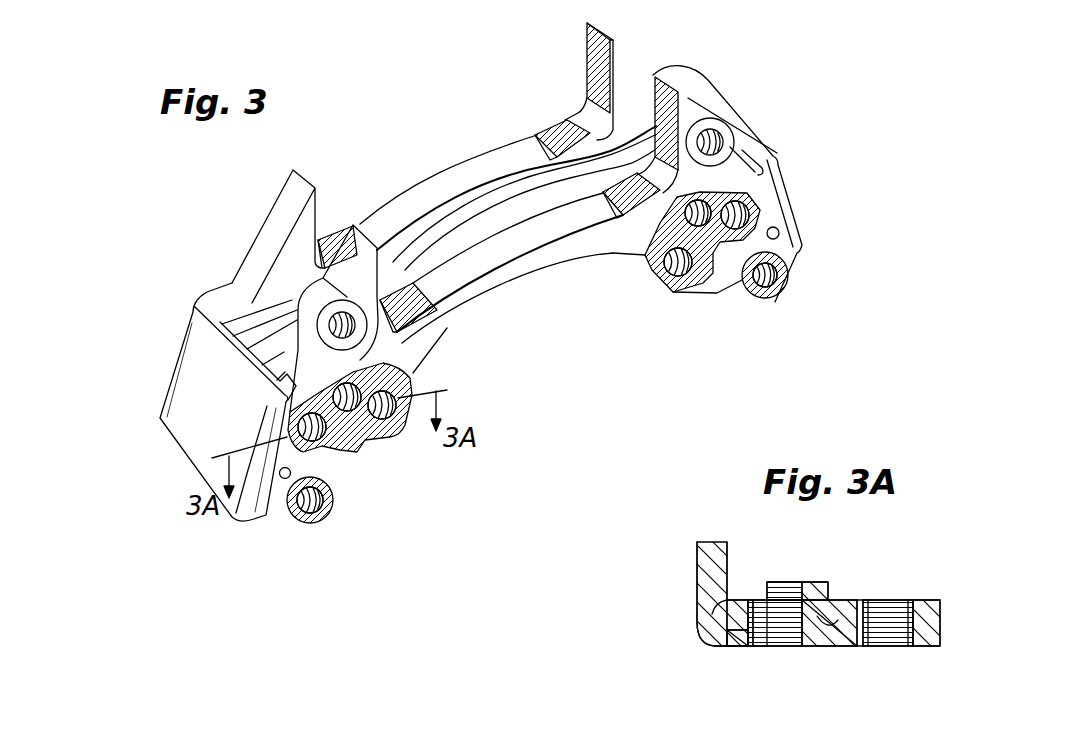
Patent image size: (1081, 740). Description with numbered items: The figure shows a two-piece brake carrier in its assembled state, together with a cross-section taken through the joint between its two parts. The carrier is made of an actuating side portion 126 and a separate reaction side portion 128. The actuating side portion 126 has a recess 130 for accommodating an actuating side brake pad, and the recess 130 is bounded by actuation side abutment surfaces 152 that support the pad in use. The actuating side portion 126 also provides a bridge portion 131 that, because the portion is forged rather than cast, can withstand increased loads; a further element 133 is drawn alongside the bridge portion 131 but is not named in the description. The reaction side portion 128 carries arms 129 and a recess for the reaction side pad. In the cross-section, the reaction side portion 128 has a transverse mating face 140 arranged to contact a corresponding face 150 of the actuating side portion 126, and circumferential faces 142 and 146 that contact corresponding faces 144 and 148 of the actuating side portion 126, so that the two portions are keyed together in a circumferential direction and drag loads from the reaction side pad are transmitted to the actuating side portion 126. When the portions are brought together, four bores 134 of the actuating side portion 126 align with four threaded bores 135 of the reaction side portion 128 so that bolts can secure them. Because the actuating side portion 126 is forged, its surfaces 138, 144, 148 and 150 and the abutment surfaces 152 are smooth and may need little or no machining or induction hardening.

In FIG. 3, the actuating side portion 126 is at (730, 170).
In FIG. 3A, the actuating side portion 126 is at (940, 625).
In FIG. 3, the reaction side portion 128 is at (208, 300).
In FIG. 3, the arms 129 is at (217, 417).
In FIG. 3A, the arms 129 is at (697, 558).
In FIG. 3, the recess 130 is at (663, 175).
In FIG. 3, the bridge portion 131 is at (480, 250).
In FIG. 3, the upper rail 133 is at (430, 187).
In FIG. 3A, the bores 134 is at (785, 640).
In FIG. 3A, the threaded bores 135 is at (780, 605).
In FIG. 3, the surfaces 138 is at (362, 430).
In FIG. 3A, the transverse mating face 140 is at (748, 640).
In FIG. 3A, the circumferential face 142 is at (735, 652).
In FIG. 3A, the face 144 is at (727, 640).
In FIG. 3A, the circumferential face 146 is at (840, 605).
In FIG. 3A, the face 148 is at (826, 622).
In FIG. 3A, the face 150 is at (727, 630).
In FIG. 3, the actuation side abutment surfaces 152 is at (395, 223).